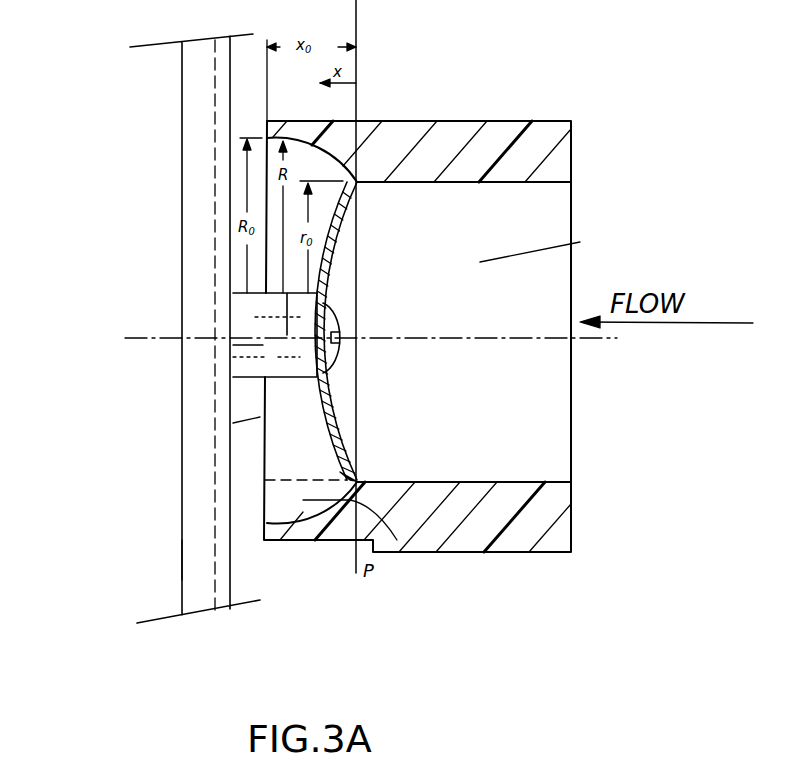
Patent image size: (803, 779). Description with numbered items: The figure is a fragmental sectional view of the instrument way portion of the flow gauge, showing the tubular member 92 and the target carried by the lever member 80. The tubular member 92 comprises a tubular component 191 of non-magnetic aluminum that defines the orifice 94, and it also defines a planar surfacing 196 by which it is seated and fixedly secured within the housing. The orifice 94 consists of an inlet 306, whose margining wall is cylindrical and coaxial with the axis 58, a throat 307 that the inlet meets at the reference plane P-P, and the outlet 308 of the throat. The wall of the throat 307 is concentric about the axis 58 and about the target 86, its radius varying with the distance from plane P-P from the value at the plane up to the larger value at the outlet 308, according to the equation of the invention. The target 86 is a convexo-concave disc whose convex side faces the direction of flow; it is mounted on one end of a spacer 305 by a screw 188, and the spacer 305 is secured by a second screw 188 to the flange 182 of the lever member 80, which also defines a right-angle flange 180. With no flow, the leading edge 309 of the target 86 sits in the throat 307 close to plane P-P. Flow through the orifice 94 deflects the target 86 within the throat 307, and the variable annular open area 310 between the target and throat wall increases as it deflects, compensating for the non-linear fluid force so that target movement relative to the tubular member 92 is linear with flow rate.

The axis 58 is at (507, 340).
The lever member 80 is at (150, 328).
The target 86 is at (400, 331).
The tubular member 92 is at (490, 353).
The orifice 94 is at (527, 224).
The flange 180 is at (190, 530).
The flange 182 is at (222, 242).
The screw 188 is at (330, 330).
The tubular component 191 is at (531, 121).
The planar surfacing 196 is at (458, 121).
The spacer 305 is at (233, 345).
The inlet 306 is at (580, 242).
The throat 307 is at (297, 455).
The outlet 308 is at (233, 423).
The leading edge 309 is at (357, 478).
The variable annular open area 310 is at (400, 553).